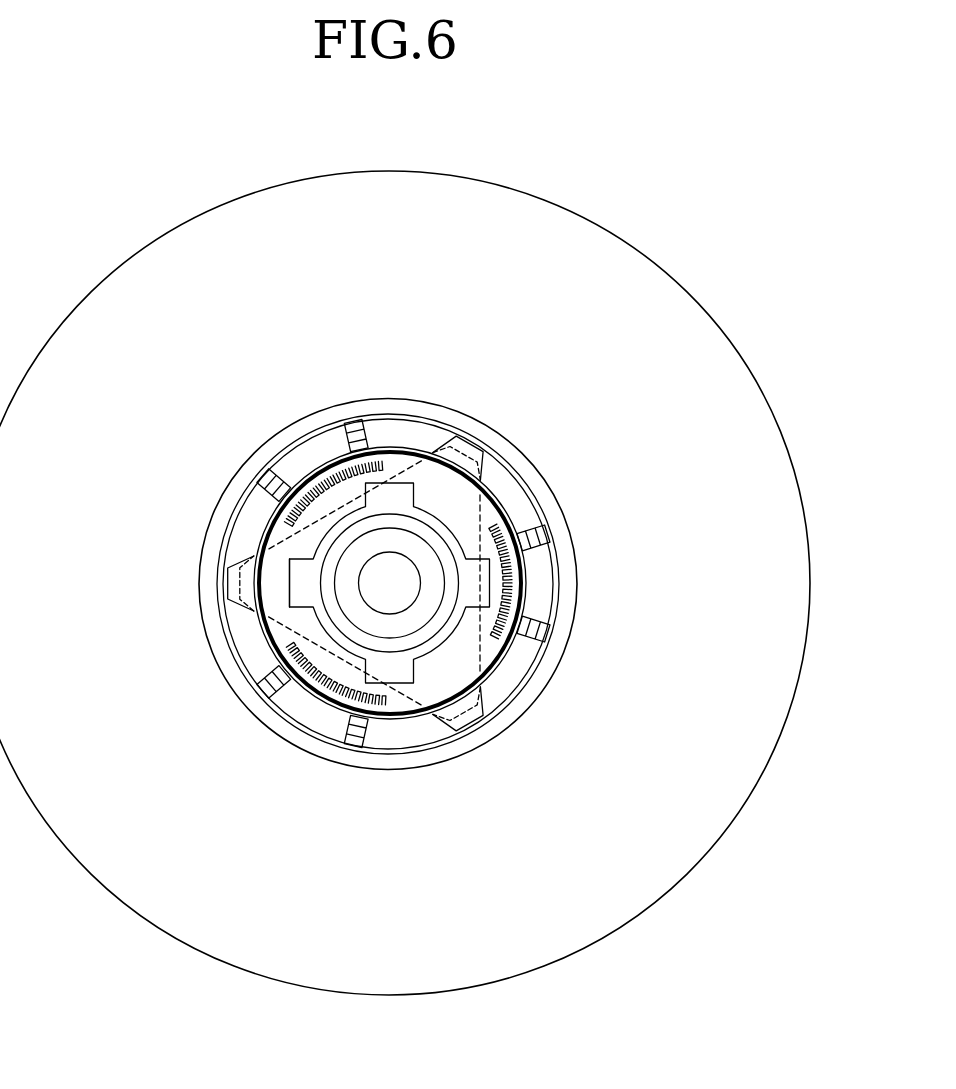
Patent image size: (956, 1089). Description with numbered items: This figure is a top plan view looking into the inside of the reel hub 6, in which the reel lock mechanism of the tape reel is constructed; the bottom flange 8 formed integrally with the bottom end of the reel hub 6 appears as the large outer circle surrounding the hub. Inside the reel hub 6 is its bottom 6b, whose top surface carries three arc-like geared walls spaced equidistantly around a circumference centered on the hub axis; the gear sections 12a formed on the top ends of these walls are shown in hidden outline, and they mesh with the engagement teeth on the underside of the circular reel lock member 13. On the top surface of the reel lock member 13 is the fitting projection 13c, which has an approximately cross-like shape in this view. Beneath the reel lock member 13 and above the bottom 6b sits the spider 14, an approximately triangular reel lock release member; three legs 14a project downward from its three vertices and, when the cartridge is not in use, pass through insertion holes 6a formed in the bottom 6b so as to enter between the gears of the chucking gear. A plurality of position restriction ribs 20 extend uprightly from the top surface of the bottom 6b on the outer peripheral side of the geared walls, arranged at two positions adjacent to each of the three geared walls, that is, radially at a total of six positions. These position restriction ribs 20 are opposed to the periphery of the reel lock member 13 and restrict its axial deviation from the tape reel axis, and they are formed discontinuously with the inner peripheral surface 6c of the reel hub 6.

The bottom flange 8 is at (562, 211).
The reel hub 6 is at (418, 400).
The insertion holes 6a is at (437, 447).
The bottom 6b is at (245, 516).
The inner peripheral surface 6c is at (533, 653).
The gear sections 12a is at (383, 450).
The reel lock member 13 is at (282, 636).
The fitting projection 13c is at (297, 586).
The spider 14 is at (530, 660).
The legs 14a is at (480, 440).
The position restriction ribs 20 is at (262, 476).